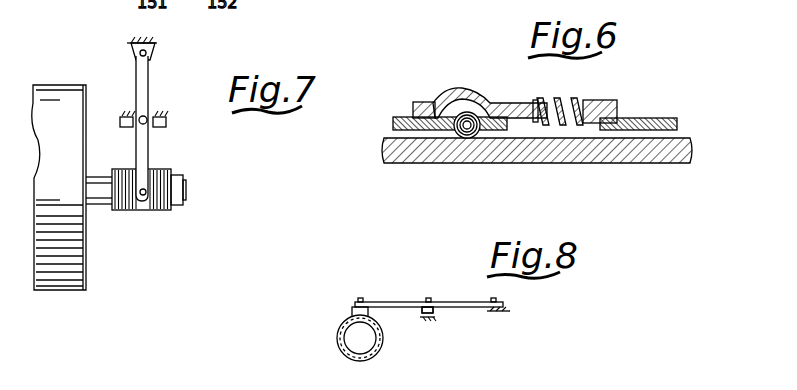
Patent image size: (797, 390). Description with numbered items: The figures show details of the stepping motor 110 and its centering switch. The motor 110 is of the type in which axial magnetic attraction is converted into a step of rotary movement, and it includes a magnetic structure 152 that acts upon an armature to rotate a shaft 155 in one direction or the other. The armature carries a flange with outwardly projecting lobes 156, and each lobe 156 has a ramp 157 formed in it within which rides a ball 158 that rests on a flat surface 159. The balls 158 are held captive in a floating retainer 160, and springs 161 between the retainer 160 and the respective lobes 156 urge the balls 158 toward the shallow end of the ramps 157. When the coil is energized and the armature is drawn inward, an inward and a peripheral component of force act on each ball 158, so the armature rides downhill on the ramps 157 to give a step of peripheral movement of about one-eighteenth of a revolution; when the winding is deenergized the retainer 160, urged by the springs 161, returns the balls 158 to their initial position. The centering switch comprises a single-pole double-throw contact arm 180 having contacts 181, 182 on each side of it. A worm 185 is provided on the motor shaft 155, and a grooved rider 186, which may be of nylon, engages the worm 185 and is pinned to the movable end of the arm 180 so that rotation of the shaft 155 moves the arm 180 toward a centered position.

In FIG. 7, the motor 110 is at (52, 292).
In FIG. 7, the magnetic structure 152 is at (85, 292).
In FIG. 7, the shaft 155 is at (186, 179).
In FIG. 8, the shaft 155 is at (365, 343).
In FIG. 6, the lobe 156 is at (418, 102).
In FIG. 6, the ramp 157 is at (443, 92).
In FIG. 6, the ball 158 is at (466, 138).
In FIG. 6, the flat surface 159 is at (500, 160).
In FIG. 6, the floating retainer 160 is at (446, 128).
In FIG. 6, the spring 161 is at (560, 100).
In FIG. 7, the contact arm 180 is at (149, 98).
In FIG. 8, the contact arm 180 is at (387, 302).
In FIG. 7, the contact 181 is at (126, 128).
In FIG. 8, the contact 181 is at (433, 318).
In FIG. 7, the contact 182 is at (166, 128).
In FIG. 8, the contact 182 is at (427, 310).
In FIG. 7, the worm 185 is at (148, 212).
In FIG. 8, the worm 185 is at (340, 350).
In FIG. 7, the grooved rider 186 is at (127, 212).
In FIG. 8, the grooved rider 186 is at (352, 310).